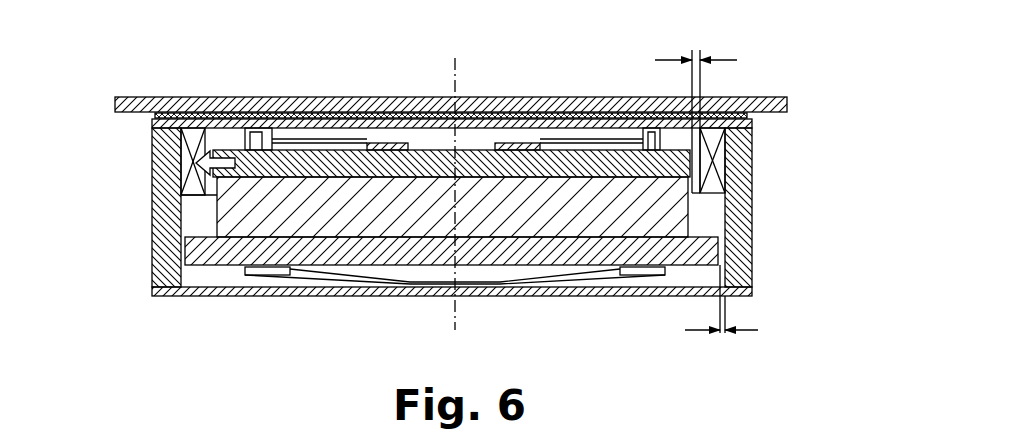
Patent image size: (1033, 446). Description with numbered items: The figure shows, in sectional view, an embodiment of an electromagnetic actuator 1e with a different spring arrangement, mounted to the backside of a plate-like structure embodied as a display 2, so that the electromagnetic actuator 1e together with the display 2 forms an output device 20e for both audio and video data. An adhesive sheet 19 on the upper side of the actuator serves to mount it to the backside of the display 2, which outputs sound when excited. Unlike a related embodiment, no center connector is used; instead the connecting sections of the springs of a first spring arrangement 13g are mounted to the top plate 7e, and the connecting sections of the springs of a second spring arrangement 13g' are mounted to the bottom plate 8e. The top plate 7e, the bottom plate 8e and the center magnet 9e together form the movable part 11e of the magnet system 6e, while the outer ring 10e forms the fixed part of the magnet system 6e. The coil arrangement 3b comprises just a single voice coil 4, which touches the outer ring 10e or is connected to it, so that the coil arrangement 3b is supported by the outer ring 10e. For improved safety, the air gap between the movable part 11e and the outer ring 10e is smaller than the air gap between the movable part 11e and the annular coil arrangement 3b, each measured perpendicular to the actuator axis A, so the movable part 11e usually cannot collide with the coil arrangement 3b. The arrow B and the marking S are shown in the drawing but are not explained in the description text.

The electromagnetic actuator 1e is at (828, 318).
The display 2 is at (212, 100).
The coil arrangement 3b is at (105, 155).
The voice coil 4 is at (185, 158).
The magnet system 6e is at (888, 163).
The top plate 7e is at (680, 168).
The bottom plate 8e is at (708, 252).
The center magnet 9e is at (680, 207).
The outer ring 10e is at (745, 268).
The movable part 11e is at (826, 133).
The first spring arrangement 13g is at (452, 100).
The second spring arrangement 13g' is at (455, 304).
The adhesive sheet 19 is at (170, 113).
The output device 20e is at (762, 57).
The actuator axis A is at (440, 190).
The direction of movement B is at (222, 156).
The gap S is at (593, 95).